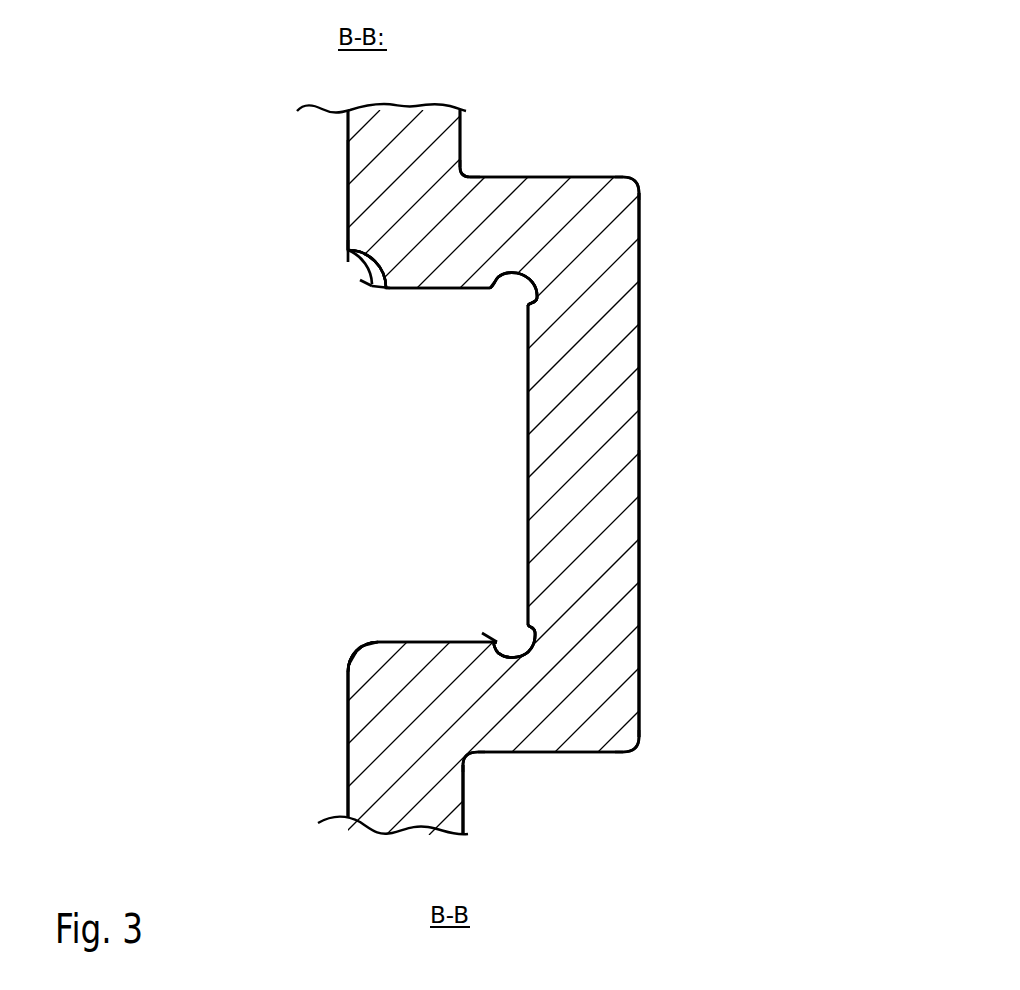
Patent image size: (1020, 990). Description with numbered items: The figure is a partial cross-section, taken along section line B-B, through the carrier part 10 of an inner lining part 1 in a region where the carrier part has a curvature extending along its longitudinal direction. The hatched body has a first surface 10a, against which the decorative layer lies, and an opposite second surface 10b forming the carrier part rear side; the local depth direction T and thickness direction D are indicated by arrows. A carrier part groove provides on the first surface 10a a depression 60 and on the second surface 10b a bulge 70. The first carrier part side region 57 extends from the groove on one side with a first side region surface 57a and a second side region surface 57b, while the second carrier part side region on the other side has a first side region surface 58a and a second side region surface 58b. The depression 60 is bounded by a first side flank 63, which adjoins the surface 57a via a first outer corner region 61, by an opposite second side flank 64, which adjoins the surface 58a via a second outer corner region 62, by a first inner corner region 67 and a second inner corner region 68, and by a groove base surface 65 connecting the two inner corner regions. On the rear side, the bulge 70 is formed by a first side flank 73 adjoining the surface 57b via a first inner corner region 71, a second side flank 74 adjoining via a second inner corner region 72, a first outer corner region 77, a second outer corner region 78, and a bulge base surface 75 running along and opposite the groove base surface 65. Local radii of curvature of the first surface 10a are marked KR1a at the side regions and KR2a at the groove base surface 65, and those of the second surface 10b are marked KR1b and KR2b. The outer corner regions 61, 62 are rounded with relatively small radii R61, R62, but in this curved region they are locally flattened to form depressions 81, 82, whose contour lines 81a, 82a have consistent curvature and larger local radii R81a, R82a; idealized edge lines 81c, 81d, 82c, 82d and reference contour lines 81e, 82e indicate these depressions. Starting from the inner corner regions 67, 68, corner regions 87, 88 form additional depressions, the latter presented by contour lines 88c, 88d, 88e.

The inner lining part 1 is at (553, 75).
The carrier part 10 is at (573, 183).
The first surface 10a is at (347, 194).
The second surface 10b is at (655, 224).
The first carrier part side region 57 is at (252, 723).
The first side region surface 57a is at (347, 765).
The second side region surface 57b is at (463, 815).
The first side region surface 58a is at (347, 143).
The second side region surface 58b is at (465, 126).
The depression 60 is at (462, 502).
The first outer corner region 61 is at (357, 647).
The second outer corner region 62 is at (350, 273).
The first side flank 63 is at (404, 642).
The second side flank 64 is at (398, 290).
The groove base surface 65 is at (527, 437).
The first inner corner region 67 is at (528, 637).
The second inner corner region 68 is at (506, 288).
The bulge 70 is at (683, 555).
The first inner corner region 71 is at (470, 763).
The second inner corner region 72 is at (467, 174).
The first side flank 73 is at (533, 752).
The second side flank 74 is at (542, 176).
The bulge base surface 75 is at (640, 572).
The first outer corner region 77 is at (641, 733).
The second outer corner region 78 is at (628, 180).
The depression 81 is at (347, 672).
The corner region contour line 81a is at (348, 662).
The edge line 81c is at (372, 642).
The edge line 81d is at (350, 683).
The contour line 81e is at (347, 650).
The depression 82 is at (347, 279).
The corner region contour line 82a is at (347, 266).
The edge line 82c is at (382, 292).
The edge line 82d is at (350, 264).
The contour line 82e is at (366, 292).
The corner region 87 is at (510, 652).
The corner region 88 is at (521, 308).
The contour line 88c is at (516, 340).
The contour line 88d is at (492, 289).
The contour line 88e is at (512, 312).
The local radius of curvature KR1a is at (348, 168).
The local radius of curvature KR1b is at (525, 112).
The local radius of curvature KR2a is at (612, 403).
The local radius of curvature KR2b is at (725, 403).
The rounding radius R61 is at (377, 650).
The rounding radius R62 is at (366, 260).
The local radius R81a is at (362, 677).
The local radius R82a is at (382, 278).
The depth direction T is at (381, 883).
The thickness direction D is at (402, 883).